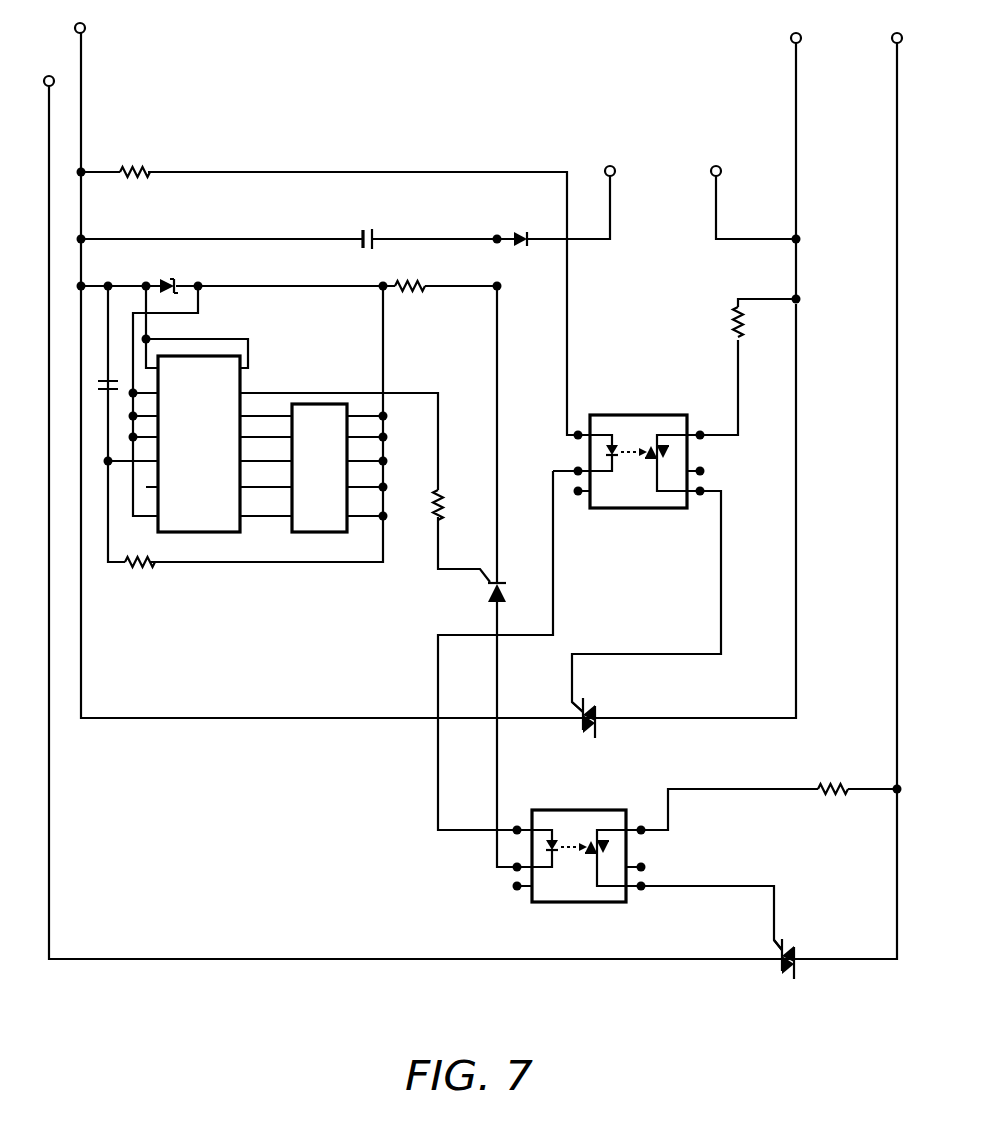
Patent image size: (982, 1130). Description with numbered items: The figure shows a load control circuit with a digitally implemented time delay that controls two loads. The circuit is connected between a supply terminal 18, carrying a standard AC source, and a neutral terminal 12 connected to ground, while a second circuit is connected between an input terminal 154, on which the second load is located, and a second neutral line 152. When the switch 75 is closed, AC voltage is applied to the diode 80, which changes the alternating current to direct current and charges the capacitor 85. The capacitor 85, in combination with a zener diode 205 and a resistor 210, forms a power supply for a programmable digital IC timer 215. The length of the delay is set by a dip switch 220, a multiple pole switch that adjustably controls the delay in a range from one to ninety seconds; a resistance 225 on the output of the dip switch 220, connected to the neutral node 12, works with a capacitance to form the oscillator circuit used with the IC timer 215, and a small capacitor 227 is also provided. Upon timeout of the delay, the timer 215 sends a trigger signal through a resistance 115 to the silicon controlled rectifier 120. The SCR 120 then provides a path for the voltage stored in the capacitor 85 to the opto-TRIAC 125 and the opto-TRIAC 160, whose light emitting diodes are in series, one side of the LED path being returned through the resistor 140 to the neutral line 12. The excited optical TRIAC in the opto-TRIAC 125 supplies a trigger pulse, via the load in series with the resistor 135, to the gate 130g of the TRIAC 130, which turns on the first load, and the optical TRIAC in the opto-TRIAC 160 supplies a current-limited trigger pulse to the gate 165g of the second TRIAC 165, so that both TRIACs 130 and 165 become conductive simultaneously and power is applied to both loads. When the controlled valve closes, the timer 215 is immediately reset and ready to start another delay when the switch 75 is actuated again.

The neutral terminal 12 is at (86, 29).
The second neutral line 152 is at (55, 82).
The resistor 140 is at (134, 167).
The capacitor 227 is at (116, 378).
The zener diode 205 is at (171, 279).
The capacitor 85 is at (368, 228).
The diode 80 is at (521, 232).
The switch 75 is at (665, 168).
The supply terminal 18 is at (790, 38).
The input terminal 154 is at (891, 38).
The resistor 210 is at (412, 296).
The programmable digital IC timer 215 is at (243, 371).
The resistor 135 is at (734, 326).
The dip switch 220 is at (293, 534).
The resistance 225 is at (135, 568).
The resistance 115 is at (443, 508).
The silicon controlled rectifier 120 is at (506, 582).
The opto-TRIAC 125 is at (630, 509).
The gate 130g is at (570, 685).
The TRIAC 130 is at (597, 706).
The opto-TRIAC 160 is at (575, 902).
The gate 165g is at (776, 915).
The second TRIAC 165 is at (797, 948).